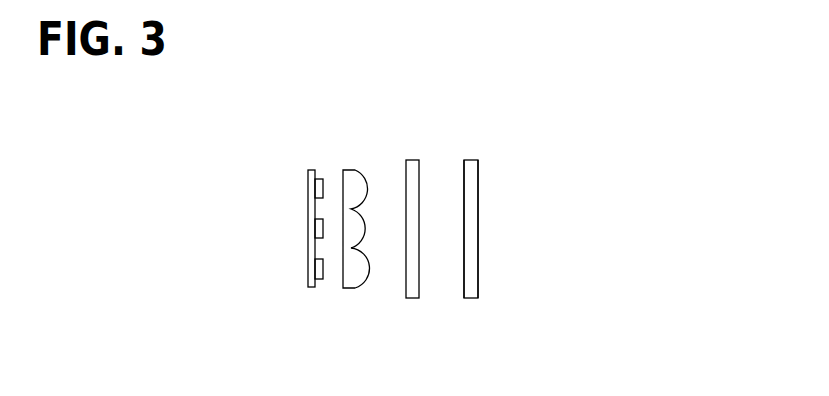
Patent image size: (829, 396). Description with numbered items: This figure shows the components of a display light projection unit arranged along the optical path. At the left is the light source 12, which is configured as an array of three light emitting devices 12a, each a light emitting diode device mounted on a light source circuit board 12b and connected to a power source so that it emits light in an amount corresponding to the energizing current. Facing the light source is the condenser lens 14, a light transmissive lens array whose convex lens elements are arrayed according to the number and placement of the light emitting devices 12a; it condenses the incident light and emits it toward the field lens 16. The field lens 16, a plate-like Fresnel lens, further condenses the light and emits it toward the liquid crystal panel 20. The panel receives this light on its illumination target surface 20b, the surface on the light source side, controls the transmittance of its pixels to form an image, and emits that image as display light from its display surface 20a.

The light source 12 is at (245, 180).
The light emitting device 12a is at (315, 190).
The light source circuit board 12b is at (308, 184).
The condenser lens 14 is at (343, 183).
The field lens 16 is at (419, 278).
The liquid crystal panel 20 is at (478, 278).
The display surface 20a is at (478, 196).
The illumination target surface 20b is at (463, 196).